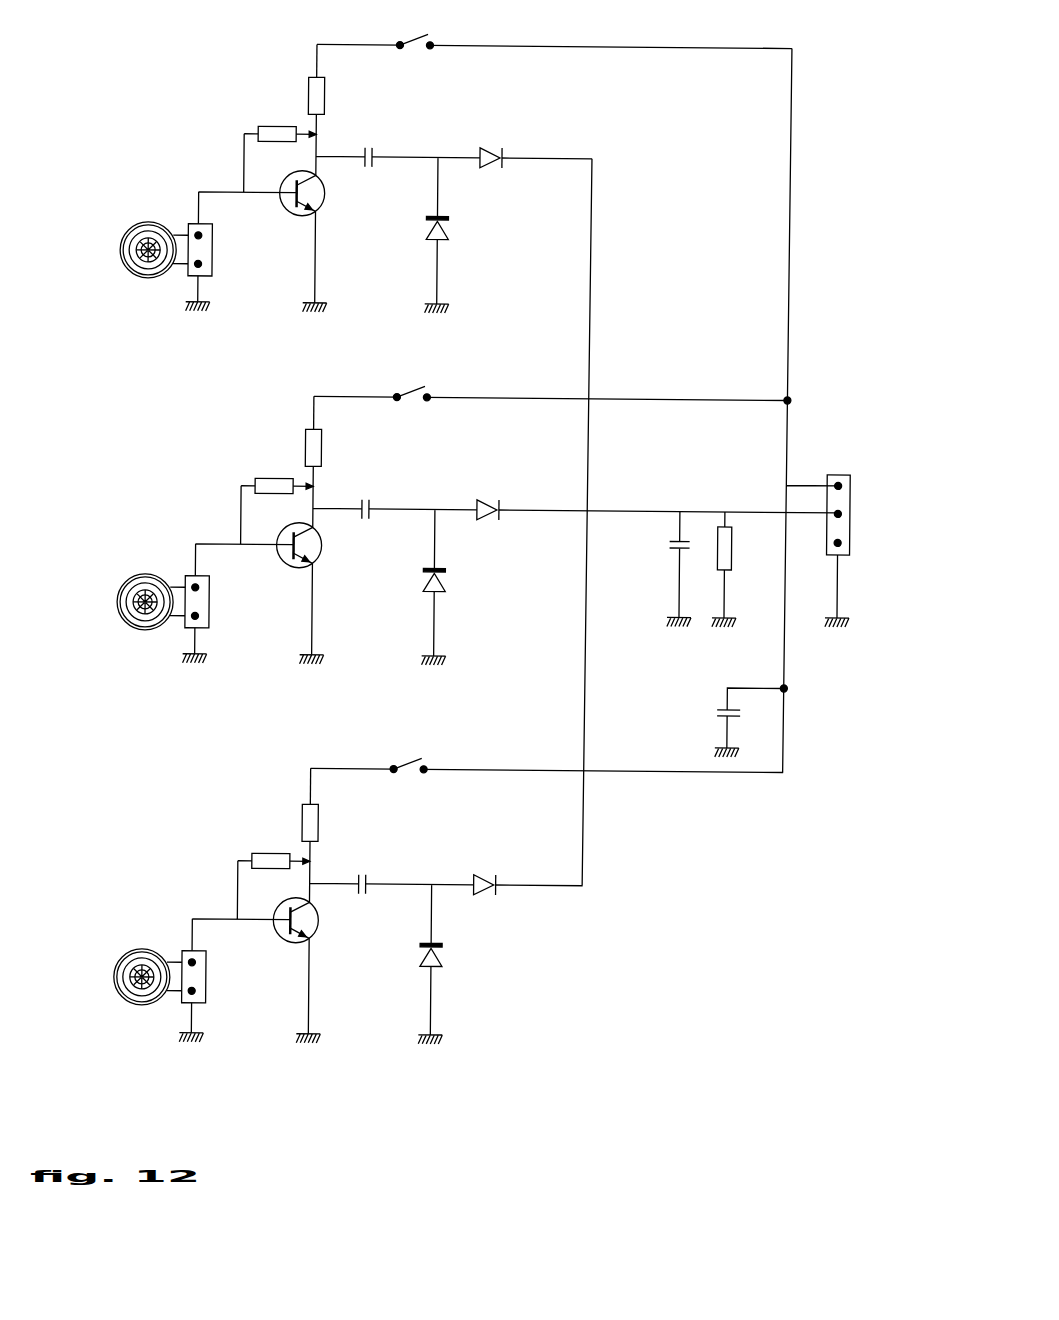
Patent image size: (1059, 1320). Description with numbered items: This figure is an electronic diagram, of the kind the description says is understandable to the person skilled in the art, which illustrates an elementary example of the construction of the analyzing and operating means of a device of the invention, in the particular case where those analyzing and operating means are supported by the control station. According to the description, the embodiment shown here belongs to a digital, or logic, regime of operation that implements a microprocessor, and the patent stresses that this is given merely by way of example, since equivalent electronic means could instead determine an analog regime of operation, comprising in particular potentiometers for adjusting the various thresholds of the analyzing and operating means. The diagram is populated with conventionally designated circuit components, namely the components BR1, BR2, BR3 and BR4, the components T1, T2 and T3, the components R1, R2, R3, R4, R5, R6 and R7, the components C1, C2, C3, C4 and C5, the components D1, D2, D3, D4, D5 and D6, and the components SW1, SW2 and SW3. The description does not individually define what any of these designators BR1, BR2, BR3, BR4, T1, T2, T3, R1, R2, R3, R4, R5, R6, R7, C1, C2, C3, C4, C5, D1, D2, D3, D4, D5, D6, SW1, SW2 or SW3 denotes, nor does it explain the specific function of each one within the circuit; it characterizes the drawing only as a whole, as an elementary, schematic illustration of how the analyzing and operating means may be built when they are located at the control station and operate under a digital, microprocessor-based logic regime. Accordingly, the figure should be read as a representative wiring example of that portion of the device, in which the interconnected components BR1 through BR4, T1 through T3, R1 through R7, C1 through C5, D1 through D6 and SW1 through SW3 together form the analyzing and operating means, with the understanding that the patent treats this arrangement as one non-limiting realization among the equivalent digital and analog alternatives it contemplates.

The microphone connector 1 BR1 is at (182, 250).
The microphone connector 2 BR2 is at (179, 602).
The microphone connector 3 BR3 is at (178, 977).
The output connector BR4 is at (875, 502).
The transistor BC547C T1 is at (325, 199).
The transistor BC547C T2 is at (322, 552).
The transistor BC547C T3 is at (320, 928).
The bias resistor 2.2 MOhm R1 is at (278, 135).
The bias resistor 2.2 MOhm R2 is at (275, 488).
The bias resistor 2.2 MOhm R3 is at (272, 861).
The collector resistor 33 kOhm R4 is at (338, 79).
The collector resistor 33 kOhm R5 is at (335, 431).
The collector resistor 33 kOhm R6 is at (332, 805).
The load resistor 1 MOhm R7 is at (745, 544).
The coupling capacitor 10 nF C1 is at (365, 152).
The coupling capacitor 10 nF C2 is at (360, 505).
The coupling capacitor 10 nF C3 is at (356, 882).
The filter capacitor 10 nF C4 is at (656, 538).
The decoupling capacitor 0.1 uF C5 is at (701, 708).
The diode BAT85 D1 is at (460, 238).
The diode BAT85 D2 is at (496, 160).
The diode BAT85 D3 is at (451, 591).
The diode BAT85 D4 is at (493, 512).
The diode BAT85 D5 is at (449, 969).
The diode BAT85 D6 is at (485, 885).
The switch 1 SW1 is at (415, 33).
The switch 2 SW2 is at (411, 383).
The switch 3 SW3 is at (409, 755).